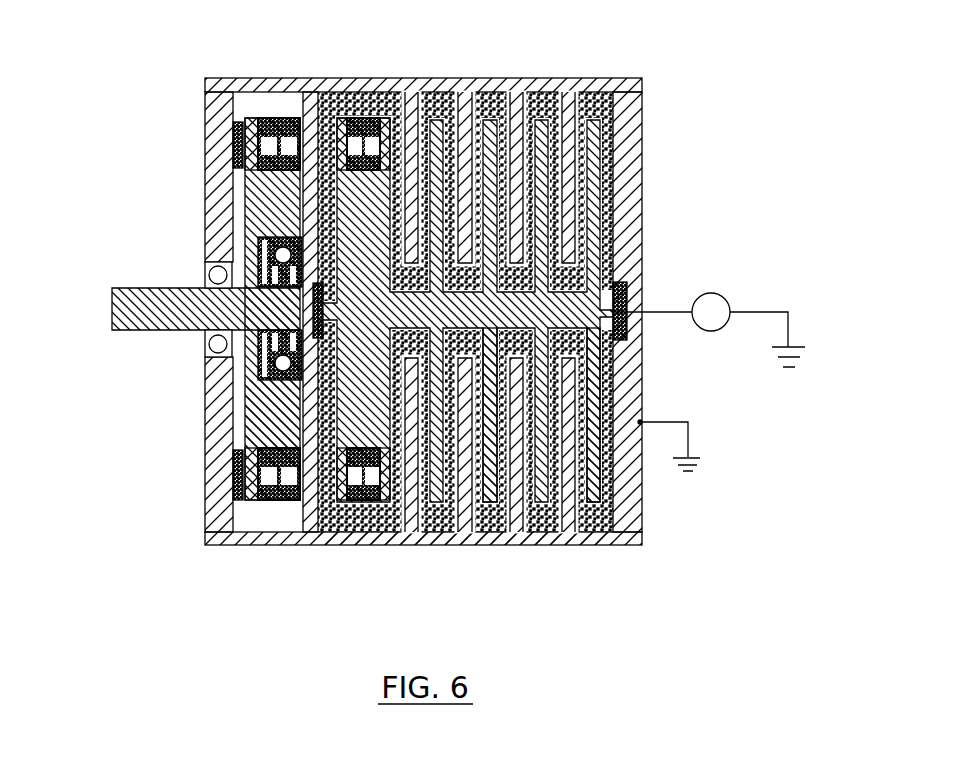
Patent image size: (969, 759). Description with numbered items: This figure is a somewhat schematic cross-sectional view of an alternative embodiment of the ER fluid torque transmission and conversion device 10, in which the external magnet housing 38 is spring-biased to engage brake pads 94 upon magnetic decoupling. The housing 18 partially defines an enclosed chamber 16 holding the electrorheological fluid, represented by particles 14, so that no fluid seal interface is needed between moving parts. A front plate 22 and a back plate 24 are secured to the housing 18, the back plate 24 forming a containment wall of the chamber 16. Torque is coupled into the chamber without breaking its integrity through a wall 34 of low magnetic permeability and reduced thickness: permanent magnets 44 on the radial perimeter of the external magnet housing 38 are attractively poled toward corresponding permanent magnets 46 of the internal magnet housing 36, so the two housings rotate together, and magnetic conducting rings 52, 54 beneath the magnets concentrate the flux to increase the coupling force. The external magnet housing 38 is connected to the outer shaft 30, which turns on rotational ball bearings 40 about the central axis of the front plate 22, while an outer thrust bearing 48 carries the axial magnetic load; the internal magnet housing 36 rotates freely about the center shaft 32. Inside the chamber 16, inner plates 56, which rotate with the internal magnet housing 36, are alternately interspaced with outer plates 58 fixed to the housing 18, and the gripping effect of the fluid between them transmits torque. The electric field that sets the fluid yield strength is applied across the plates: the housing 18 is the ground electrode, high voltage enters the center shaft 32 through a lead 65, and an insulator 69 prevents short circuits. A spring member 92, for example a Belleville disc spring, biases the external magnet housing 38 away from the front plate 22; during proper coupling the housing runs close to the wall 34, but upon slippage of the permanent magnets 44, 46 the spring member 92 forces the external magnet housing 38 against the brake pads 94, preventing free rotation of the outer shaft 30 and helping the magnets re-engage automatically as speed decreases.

The ER fluid torque transmission and conversion device 10 is at (441, 311).
The particles 14 is at (422, 307).
The enclosed chamber 16 is at (581, 94).
The housing 18 is at (497, 78).
The front plate 22 is at (203, 432).
The back plate 24 is at (642, 513).
The outer shaft 30 is at (132, 288).
The center shaft 32 is at (613, 273).
The wall 34 is at (343, 78).
The internal magnet housing 36 is at (465, 322).
The external magnet housing 38 is at (243, 428).
The rotational ball bearings 40 is at (203, 273).
The permanent magnets 44 is at (275, 500).
The permanent magnets 46 is at (348, 585).
The outer thrust bearing 48 is at (217, 353).
The magnetic conducting ring 52 is at (385, 535).
The magnetic conducting ring 54 is at (252, 503).
The inner plates 56 is at (483, 505).
The outer plates 58 is at (587, 505).
The lead 65 is at (730, 292).
The insulator 69 is at (630, 295).
The spring member 92 is at (253, 373).
The brake pads 94 is at (233, 135).